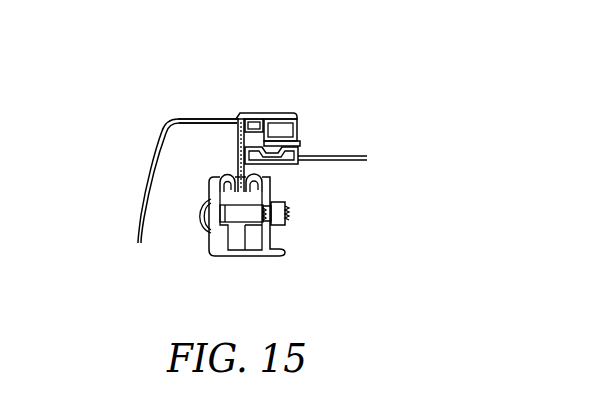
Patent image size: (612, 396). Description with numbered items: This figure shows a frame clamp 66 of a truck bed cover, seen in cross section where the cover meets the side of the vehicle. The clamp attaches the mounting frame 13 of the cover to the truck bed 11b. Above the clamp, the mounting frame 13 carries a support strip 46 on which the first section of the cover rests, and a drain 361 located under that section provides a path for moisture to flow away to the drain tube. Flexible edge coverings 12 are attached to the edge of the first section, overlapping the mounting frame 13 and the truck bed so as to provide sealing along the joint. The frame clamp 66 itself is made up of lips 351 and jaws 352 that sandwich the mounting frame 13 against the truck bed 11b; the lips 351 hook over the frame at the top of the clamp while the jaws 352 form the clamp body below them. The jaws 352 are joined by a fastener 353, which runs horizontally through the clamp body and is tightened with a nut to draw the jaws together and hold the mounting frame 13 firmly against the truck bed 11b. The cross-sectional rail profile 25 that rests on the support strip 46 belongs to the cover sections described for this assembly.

The truck bed 11b is at (142, 192).
The mounting frame 13 is at (212, 118).
The support strip 46 is at (238, 127).
The flexible edge coverings 12 is at (252, 117).
The rail frame 25 is at (295, 130).
The drain 361 is at (272, 149).
The lips 351 is at (228, 171).
The jaws 352 is at (218, 209).
The fastener 353 is at (243, 210).
The frame clamp 66 is at (305, 220).